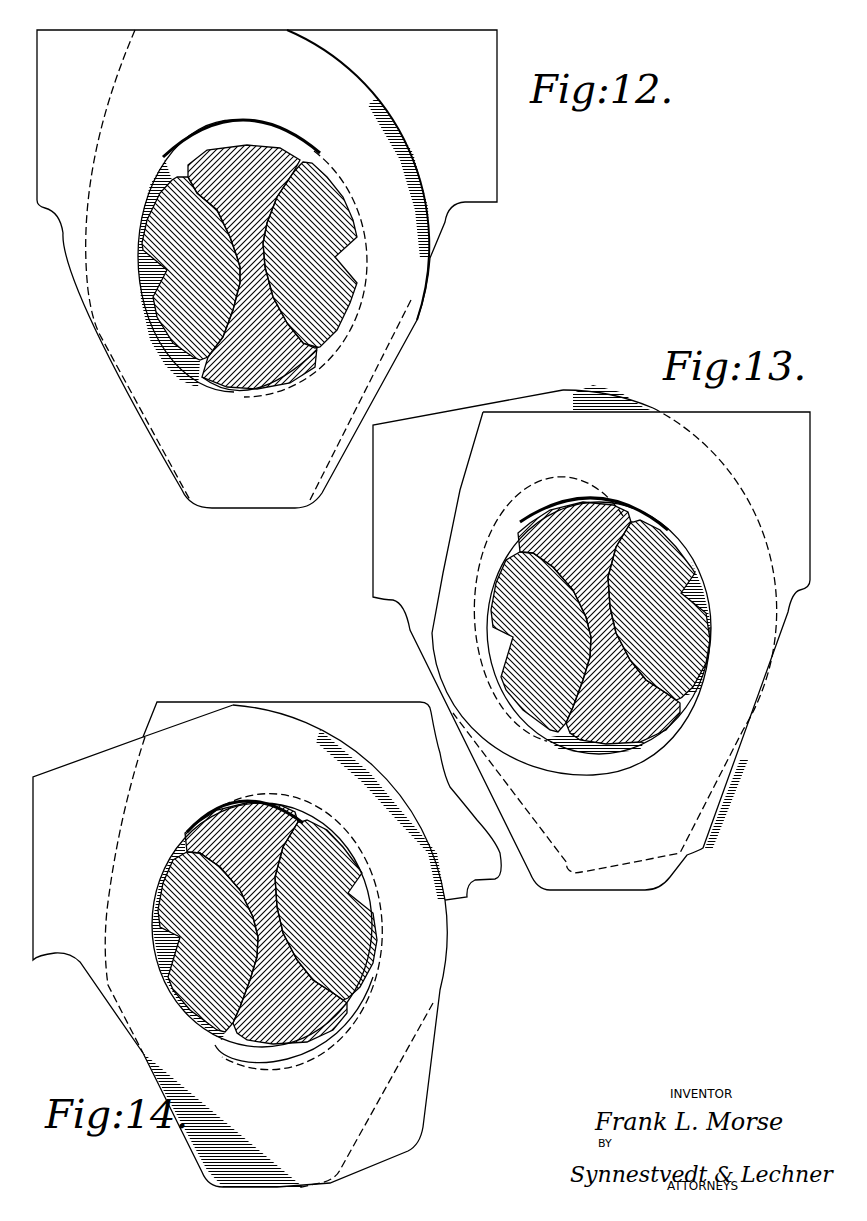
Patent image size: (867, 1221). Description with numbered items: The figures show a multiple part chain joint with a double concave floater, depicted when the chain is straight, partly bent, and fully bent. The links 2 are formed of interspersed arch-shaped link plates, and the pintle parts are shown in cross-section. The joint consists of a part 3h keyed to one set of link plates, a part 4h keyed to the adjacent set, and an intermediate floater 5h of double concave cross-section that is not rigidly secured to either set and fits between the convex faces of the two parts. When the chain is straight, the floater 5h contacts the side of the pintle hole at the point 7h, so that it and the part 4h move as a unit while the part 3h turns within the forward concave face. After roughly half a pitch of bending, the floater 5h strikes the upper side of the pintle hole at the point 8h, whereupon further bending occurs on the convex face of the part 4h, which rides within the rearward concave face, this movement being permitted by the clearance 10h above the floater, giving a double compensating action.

In FIG. 12, the link 2 is at (267, 269).
In FIG. 13, the link 2 is at (591, 637).
In FIG. 14, the link 2 is at (267, 945).
In FIG. 12, the pintle part 3h is at (183, 327).
In FIG. 13, the pintle part 3h is at (513, 633).
In FIG. 14, the pintle part 3h is at (193, 943).
In FIG. 12, the pintle part 4h is at (340, 292).
In FIG. 13, the pintle part 4h is at (677, 562).
In FIG. 14, the pintle part 4h is at (348, 882).
In FIG. 12, the floater 5h is at (253, 152).
In FIG. 13, the floater 5h is at (570, 513).
In FIG. 14, the floater 5h is at (243, 813).
In FIG. 12, the contact point 7h is at (267, 392).
In FIG. 13, the strike point 8h is at (593, 498).
In FIG. 13, the clearance 10h is at (534, 486).